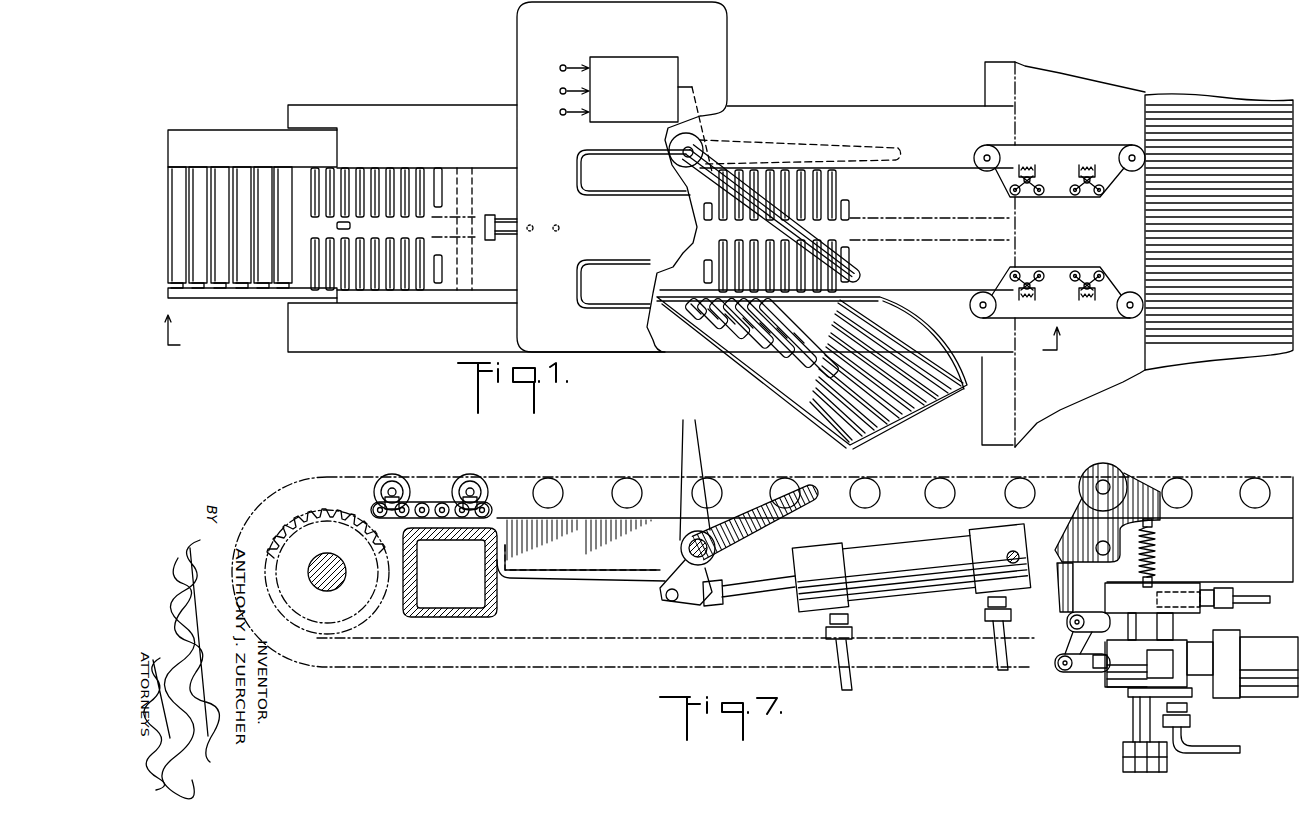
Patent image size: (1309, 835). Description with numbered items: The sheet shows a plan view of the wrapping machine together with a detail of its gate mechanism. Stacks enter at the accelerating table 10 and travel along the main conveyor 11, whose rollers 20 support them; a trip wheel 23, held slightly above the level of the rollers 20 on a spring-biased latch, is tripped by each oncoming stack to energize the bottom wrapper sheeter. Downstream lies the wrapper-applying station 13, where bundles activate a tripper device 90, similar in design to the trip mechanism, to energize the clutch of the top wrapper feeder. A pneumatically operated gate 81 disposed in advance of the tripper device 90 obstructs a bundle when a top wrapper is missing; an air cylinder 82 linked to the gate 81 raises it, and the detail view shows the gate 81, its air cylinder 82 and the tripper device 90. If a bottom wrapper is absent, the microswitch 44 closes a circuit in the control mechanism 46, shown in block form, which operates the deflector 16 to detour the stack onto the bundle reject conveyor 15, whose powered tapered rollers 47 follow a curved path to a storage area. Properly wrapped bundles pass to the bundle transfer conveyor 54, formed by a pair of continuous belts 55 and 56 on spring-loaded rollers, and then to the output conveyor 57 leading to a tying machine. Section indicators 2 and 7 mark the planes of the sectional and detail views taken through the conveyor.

In FIG. 1, the accelerating table 10 is at (233, 126).
In FIG. 1, the main conveyor 11 is at (398, 168).
In FIG. 1, the wrapper-applying station 13 is at (518, 107).
In FIG. 1, the rollers 20 is at (315, 178).
In FIG. 1, the trip wheel 23 is at (337, 226).
In FIG. 1, the pneumatically operated gate 81 is at (533, 224).
In FIG. 7, the pneumatically operated gate 81 is at (745, 520).
In FIG. 1, the tripper device 90 is at (556, 233).
In FIG. 7, the tripper device 90 is at (1110, 470).
In FIG. 1, the deflector 16 is at (712, 172).
In FIG. 1, the control mechanism 46 is at (678, 73).
In FIG. 1, the microswitch element 44 is at (568, 58).
In FIG. 1, the bundle reject conveyor 15 is at (762, 375).
In FIG. 1, the powered tapered rollers 47 is at (812, 398).
In FIG. 1, the continuous belt 55 is at (1074, 135).
In FIG. 1, the bundle transfer conveyor 54 is at (1073, 232).
In FIG. 1, the continuous belt 56 is at (1090, 318).
In FIG. 1, the output conveyor 57 is at (1205, 110).
In FIG. 7, the air cylinder 82 is at (932, 585).
In FIG. 1, the section line 2- 2 is at (1051, 348).
In FIG. 1, the section line 7- 7 is at (171, 339).